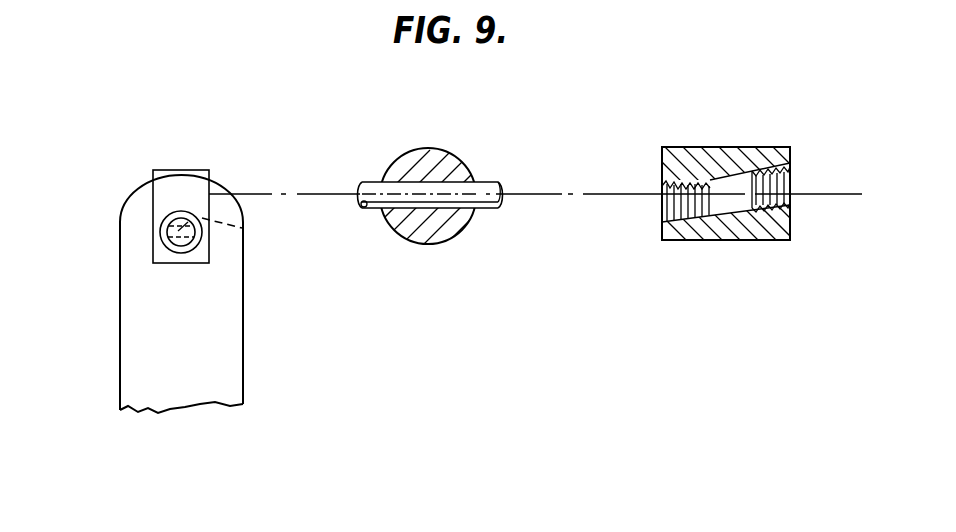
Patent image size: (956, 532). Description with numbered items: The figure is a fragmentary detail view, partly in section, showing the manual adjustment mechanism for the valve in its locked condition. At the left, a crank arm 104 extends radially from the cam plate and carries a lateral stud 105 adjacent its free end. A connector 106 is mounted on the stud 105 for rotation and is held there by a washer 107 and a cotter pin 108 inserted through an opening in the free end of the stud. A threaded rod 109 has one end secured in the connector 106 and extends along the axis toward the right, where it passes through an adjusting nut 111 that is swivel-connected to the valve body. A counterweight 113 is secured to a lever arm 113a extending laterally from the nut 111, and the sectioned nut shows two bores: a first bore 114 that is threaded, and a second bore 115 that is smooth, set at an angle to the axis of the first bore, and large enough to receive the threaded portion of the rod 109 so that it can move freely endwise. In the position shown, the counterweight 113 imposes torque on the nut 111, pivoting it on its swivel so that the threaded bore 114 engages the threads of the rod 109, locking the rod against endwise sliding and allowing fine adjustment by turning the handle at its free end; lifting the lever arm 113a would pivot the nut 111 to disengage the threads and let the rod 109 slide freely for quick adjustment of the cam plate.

The crank arm 104 is at (127, 363).
The lateral stud 105 is at (180, 250).
The connector 106 is at (188, 178).
The washer 107 is at (167, 218).
The cotter pin 108 is at (243, 229).
The threaded rod 109 is at (314, 192).
The adjusting nut 111 is at (729, 152).
The counterweight 113 is at (452, 166).
The lever arm 113a is at (487, 202).
The first bore 114 is at (790, 199).
The second bore 115 is at (782, 172).